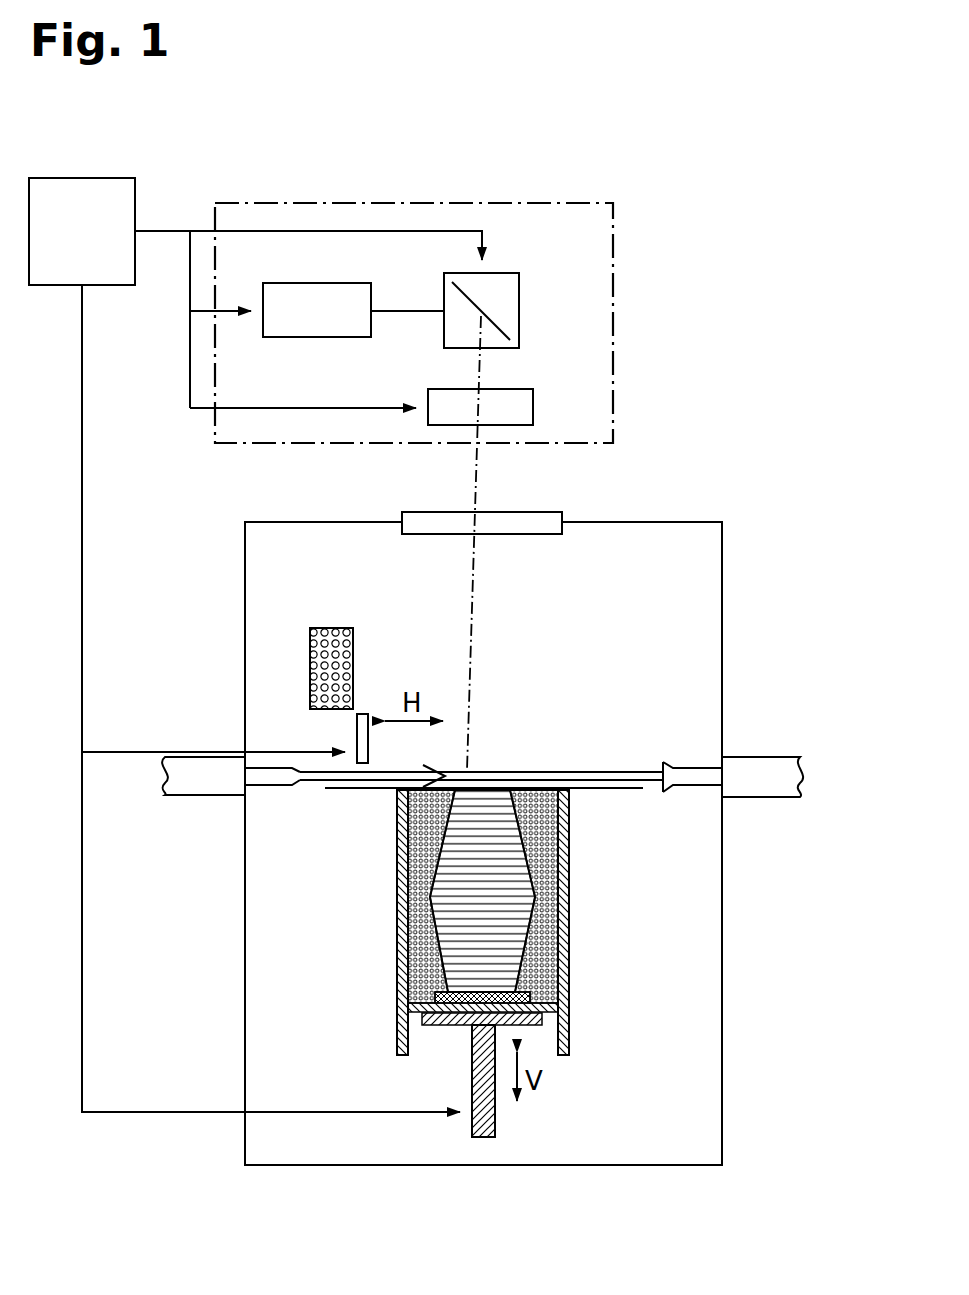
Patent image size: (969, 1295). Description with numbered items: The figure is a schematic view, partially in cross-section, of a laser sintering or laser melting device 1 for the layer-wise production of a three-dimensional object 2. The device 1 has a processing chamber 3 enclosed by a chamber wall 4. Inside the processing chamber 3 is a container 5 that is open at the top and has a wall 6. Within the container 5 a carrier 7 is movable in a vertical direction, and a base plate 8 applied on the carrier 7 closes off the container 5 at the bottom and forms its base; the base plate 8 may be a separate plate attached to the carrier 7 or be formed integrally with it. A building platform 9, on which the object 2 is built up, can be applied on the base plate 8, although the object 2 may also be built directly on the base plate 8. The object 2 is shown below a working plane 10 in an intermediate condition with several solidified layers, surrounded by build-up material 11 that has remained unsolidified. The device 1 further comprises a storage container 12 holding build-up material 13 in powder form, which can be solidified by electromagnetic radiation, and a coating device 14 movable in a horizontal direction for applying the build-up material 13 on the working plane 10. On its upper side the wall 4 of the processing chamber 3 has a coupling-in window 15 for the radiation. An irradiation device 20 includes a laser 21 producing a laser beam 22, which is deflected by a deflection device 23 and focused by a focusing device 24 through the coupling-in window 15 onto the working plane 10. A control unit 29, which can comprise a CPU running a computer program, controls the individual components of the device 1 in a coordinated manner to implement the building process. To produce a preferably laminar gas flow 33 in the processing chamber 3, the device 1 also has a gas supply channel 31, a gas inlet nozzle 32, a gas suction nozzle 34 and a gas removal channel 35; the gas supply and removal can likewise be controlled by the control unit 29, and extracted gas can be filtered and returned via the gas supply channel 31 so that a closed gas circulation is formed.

The laser sintering or laser melting device 1 is at (648, 176).
The object 2 is at (500, 848).
The processing chamber 3 is at (340, 545).
The chamber wall 4 is at (283, 522).
The container 5 is at (584, 979).
The wall 6 is at (569, 918).
The carrier 7 is at (453, 1022).
The base plate 8 is at (418, 1012).
The building platform 9 is at (440, 997).
The working plane 10 is at (543, 790).
The build-up material 11 is at (412, 850).
The storage container 12 is at (328, 628).
The build-up material 13 is at (352, 668).
The coating device 14 is at (357, 735).
The coupling-in window 15 is at (536, 520).
The irradiation device 20 is at (613, 327).
The laser 21 is at (322, 320).
The laser beam 22 is at (388, 308).
The deflection device 23 is at (497, 285).
The focusing device 24 is at (510, 398).
The control unit 29 is at (255, 645).
The gas supply channel 31 is at (183, 784).
The gas inlet nozzle 32 is at (258, 776).
The gas flow 33 is at (504, 772).
The gas suction nozzle 34 is at (686, 768).
The gas removal channel 35 is at (768, 774).